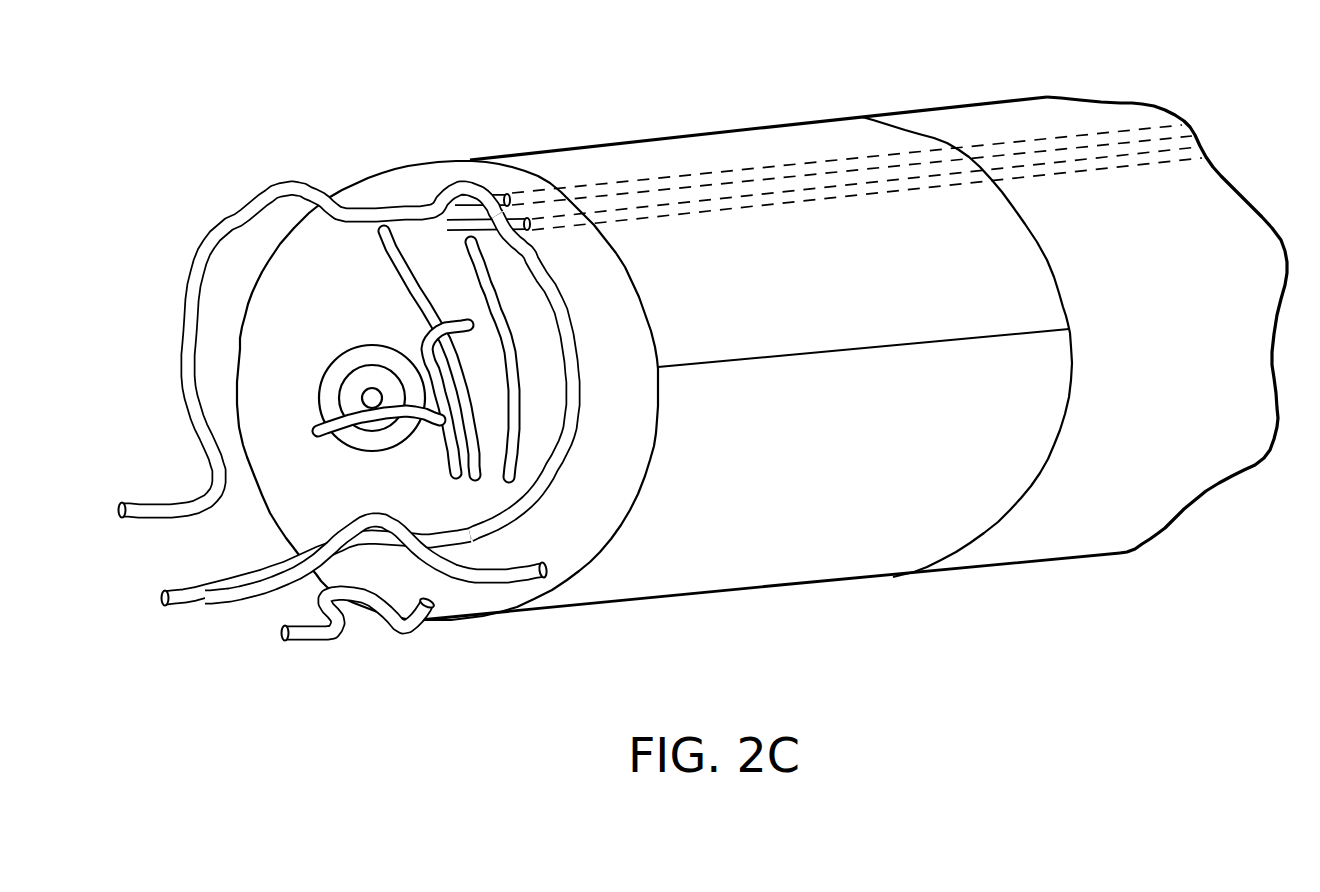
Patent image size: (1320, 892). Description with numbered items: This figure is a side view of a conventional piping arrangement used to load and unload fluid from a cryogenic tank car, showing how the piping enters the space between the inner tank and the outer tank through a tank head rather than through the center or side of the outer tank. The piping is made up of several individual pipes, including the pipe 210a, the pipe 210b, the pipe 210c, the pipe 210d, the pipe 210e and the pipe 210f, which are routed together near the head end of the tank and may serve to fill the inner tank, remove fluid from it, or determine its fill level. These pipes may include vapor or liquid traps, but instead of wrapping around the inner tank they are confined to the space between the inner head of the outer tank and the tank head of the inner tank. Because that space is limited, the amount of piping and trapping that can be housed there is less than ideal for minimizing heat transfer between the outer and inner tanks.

The pipe 210a is at (308, 341).
The pipe 210b is at (611, 375).
The pipe 210c is at (377, 353).
The pipe 210d is at (589, 359).
The pipe 210e is at (346, 612).
The pipe 210f is at (359, 666).